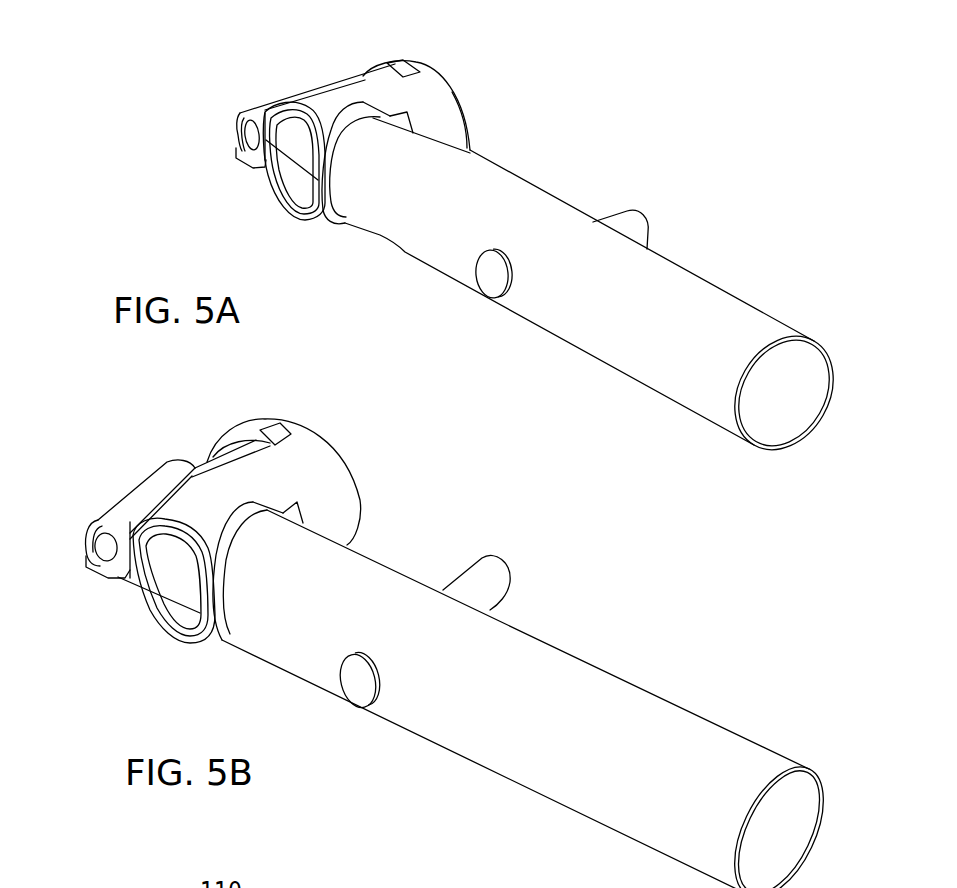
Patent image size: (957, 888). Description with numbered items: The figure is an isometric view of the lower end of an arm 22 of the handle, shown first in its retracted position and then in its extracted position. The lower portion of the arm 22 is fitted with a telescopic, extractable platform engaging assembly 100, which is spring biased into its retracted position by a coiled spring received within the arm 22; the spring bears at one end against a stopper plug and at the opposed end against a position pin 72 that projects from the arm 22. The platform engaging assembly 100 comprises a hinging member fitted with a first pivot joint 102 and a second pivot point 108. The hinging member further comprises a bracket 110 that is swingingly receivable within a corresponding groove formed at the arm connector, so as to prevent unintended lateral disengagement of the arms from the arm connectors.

In FIG. 5A, the arm 22 is at (628, 352).
In FIG. 5B, the arm 22 is at (481, 746).
In FIG. 5A, the position pin 72 is at (636, 233).
In FIG. 5B, the position pin 72 is at (484, 583).
In FIG. 5A, the platform engaging assembly 100 is at (496, 86).
In FIG. 5B, the platform engaging assembly 100 is at (318, 418).
In FIG. 5A, the first pivot joint 102 is at (362, 93).
In FIG. 5B, the first pivot joint 102 is at (222, 475).
In FIG. 5A, the second pivot point 108 is at (263, 110).
In FIG. 5B, the second pivot point 108 is at (152, 493).
In FIG. 5A, the bracket 110 is at (402, 64).
In FIG. 5B, the bracket 110 is at (244, 424).